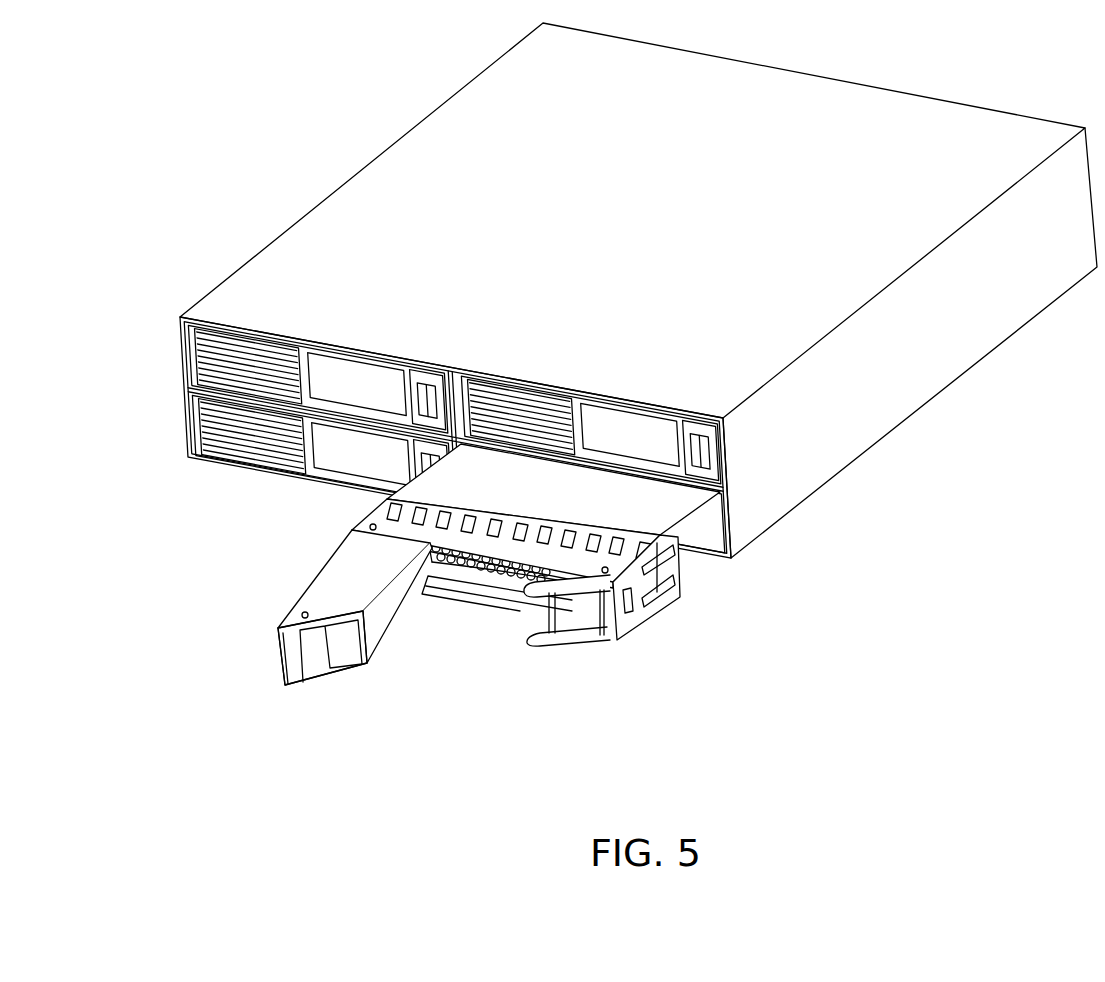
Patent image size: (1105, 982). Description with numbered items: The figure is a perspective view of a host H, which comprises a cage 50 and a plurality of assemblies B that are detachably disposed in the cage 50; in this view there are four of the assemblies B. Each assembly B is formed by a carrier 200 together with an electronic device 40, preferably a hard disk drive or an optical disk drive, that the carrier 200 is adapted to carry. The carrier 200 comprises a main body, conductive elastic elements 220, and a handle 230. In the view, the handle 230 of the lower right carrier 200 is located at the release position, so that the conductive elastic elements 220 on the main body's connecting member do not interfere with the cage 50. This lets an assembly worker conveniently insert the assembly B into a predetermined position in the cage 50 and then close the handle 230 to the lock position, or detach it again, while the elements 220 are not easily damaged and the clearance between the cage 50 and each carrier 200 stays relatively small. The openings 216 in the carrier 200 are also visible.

The cage 50 is at (315, 226).
The electronic device 40 is at (672, 508).
The carrier 200 is at (326, 510).
The through holes 216 is at (441, 503).
The conductive elastic element 220 is at (506, 444).
The handle 230 is at (379, 684).
The assembly body B is at (665, 654).
The host H is at (1047, 617).